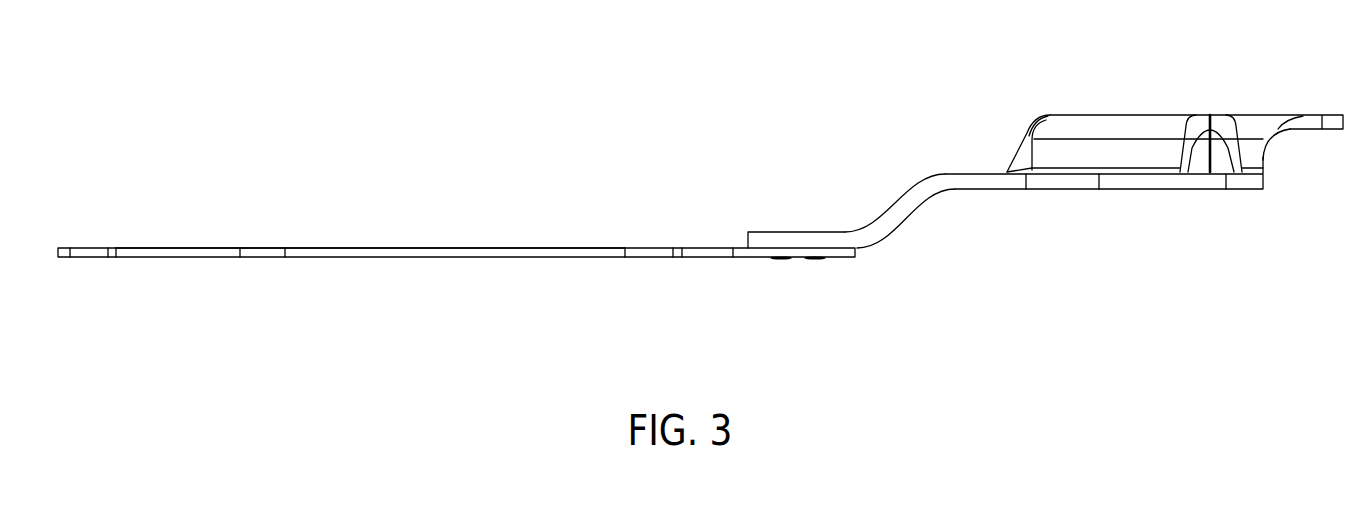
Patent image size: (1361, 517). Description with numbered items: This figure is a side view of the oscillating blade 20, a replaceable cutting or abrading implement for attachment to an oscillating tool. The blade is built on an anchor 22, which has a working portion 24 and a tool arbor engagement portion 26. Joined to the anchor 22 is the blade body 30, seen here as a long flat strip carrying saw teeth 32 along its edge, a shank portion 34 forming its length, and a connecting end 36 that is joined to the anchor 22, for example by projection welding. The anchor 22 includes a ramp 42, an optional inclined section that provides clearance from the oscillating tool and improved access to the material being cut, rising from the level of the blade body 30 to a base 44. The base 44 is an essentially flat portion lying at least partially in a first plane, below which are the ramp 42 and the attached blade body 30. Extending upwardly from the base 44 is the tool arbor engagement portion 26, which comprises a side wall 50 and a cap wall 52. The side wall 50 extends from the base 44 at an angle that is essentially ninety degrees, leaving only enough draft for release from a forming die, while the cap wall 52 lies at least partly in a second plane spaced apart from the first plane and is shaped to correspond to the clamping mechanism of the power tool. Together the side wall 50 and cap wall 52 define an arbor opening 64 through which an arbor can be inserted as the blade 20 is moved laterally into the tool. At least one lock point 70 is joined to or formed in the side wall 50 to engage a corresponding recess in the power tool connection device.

The oscillating blade 20 is at (947, 43).
The anchor 22 is at (943, 160).
The working portion 24 is at (920, 227).
The tool arbor engagement portion 26 is at (1023, 106).
The blade body 30 is at (146, 236).
The saw teeth 32 is at (86, 257).
The shank portion 34 is at (456, 247).
The connecting end 36 is at (727, 252).
The ramp 42 is at (896, 210).
The base 44 is at (797, 232).
The side wall 50 is at (1135, 152).
The cap wall 52 is at (1120, 114).
The arbor opening 64 is at (1298, 158).
The lock point 70 is at (1220, 160).